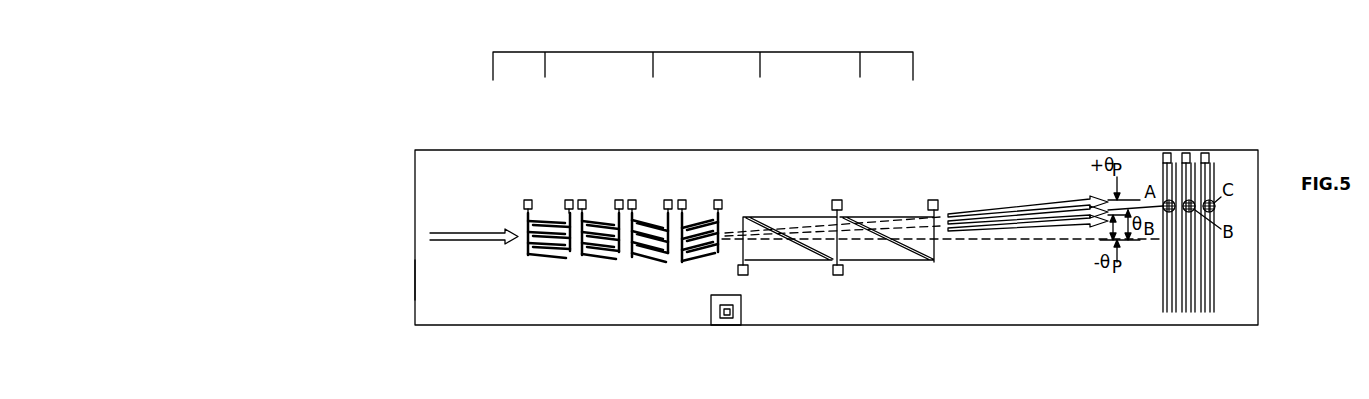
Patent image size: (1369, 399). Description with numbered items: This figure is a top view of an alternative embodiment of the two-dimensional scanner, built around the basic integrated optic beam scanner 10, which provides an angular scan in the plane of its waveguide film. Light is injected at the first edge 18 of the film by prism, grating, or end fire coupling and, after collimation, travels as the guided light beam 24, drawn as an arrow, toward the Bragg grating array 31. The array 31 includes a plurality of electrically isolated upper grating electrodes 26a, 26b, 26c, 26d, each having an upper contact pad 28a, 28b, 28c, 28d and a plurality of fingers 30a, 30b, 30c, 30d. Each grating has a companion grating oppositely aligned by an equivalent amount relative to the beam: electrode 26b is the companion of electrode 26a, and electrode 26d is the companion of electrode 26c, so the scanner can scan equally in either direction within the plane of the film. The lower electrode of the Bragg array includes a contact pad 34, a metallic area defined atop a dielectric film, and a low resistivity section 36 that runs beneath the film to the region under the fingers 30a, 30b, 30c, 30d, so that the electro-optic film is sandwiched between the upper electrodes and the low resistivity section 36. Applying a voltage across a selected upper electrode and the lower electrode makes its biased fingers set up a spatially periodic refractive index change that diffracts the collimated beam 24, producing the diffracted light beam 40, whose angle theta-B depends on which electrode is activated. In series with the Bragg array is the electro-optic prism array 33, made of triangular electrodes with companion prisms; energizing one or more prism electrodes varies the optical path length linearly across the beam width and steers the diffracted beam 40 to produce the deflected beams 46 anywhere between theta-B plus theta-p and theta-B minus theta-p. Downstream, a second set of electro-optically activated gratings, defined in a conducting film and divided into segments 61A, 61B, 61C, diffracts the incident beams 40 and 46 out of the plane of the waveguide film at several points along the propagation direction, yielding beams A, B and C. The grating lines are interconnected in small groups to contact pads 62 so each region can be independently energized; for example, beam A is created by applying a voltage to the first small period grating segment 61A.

The integrated optic beam scanner 10 is at (1000, 150).
The first edge 18 is at (415, 281).
The guided light beam 24 is at (469, 241).
The Bragg grating array 31 is at (700, 52).
The upper grating electrode 26a is at (546, 170).
The upper contact pad 28a is at (569, 200).
The fingers 30a is at (564, 130).
The upper grating electrode 26b is at (639, 171).
The upper contact pad 28b is at (678, 109).
The fingers 30b is at (632, 122).
The upper grating electrode 26c is at (716, 172).
The upper contact pad 28c is at (783, 109).
The fingers 30c is at (737, 122).
The upper grating electrode 26d is at (794, 172).
The upper contact pad 28d is at (886, 109).
The fingers 30d is at (842, 122).
The electro-optic prism array 33 is at (908, 232).
The contact pad 34 is at (722, 311).
The low resistivity section 36 is at (709, 299).
The diffracted light beam 40 is at (1028, 220).
The deflected guided beam 46 is at (1082, 227).
The contact pads 62 is at (1165, 153).
The first small period grating segment 61A is at (1170, 313).
The grating segment 61B is at (1190, 313).
The grating segment 61C is at (1207, 313).